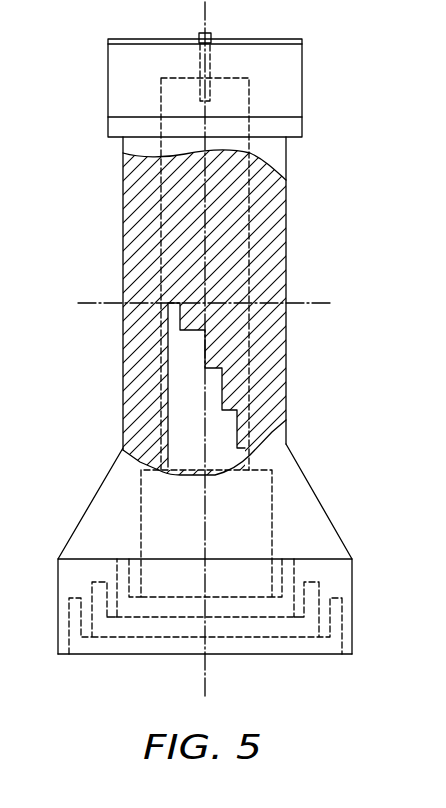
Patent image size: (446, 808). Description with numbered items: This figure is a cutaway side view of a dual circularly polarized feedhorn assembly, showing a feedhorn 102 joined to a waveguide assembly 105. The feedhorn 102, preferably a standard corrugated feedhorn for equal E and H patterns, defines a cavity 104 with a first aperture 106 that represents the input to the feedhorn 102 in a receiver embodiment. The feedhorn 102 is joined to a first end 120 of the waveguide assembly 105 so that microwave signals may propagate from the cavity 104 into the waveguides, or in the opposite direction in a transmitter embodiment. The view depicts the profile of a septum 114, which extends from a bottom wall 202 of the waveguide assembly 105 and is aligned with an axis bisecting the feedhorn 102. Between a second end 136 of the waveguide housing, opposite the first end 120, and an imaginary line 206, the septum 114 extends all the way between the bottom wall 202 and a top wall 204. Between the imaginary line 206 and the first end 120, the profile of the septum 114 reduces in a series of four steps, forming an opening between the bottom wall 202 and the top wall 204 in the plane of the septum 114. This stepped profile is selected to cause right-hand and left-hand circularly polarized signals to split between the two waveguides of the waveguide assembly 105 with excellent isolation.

The second end 136 is at (108, 40).
The bottom wall 202 is at (286, 202).
The top wall 204 is at (123, 239).
The imaginary line 206 is at (321, 303).
The waveguide assembly 105 is at (313, 326).
The septum 114 is at (218, 389).
The first end 120 is at (123, 448).
The feedhorn 102 is at (352, 559).
The cavity 104 is at (252, 537).
The first aperture 106 is at (285, 655).